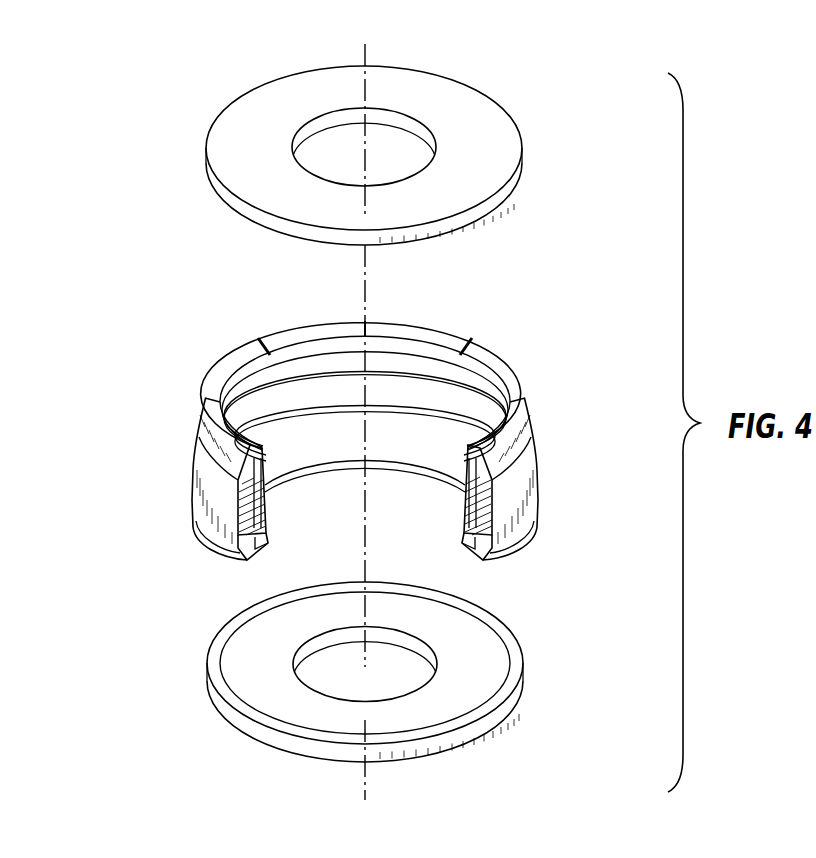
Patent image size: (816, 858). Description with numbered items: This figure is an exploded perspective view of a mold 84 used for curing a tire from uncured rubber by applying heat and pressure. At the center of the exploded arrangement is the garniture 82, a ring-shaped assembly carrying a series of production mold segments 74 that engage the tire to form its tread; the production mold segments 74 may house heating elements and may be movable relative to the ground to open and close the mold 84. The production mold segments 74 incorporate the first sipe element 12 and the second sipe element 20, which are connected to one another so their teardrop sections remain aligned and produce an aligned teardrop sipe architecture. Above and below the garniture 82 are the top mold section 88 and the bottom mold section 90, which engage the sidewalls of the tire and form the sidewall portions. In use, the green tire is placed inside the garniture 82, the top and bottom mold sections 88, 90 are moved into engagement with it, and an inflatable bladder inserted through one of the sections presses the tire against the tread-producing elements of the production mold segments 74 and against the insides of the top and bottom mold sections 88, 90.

The mold 84 is at (168, 82).
The garniture 82 is at (523, 319).
The top mold section 88 is at (497, 135).
The bottom mold section 90 is at (513, 663).
The production mold segment 74 is at (233, 367).
The first sipe element 12 is at (400, 373).
The second sipe element 20 is at (437, 377).